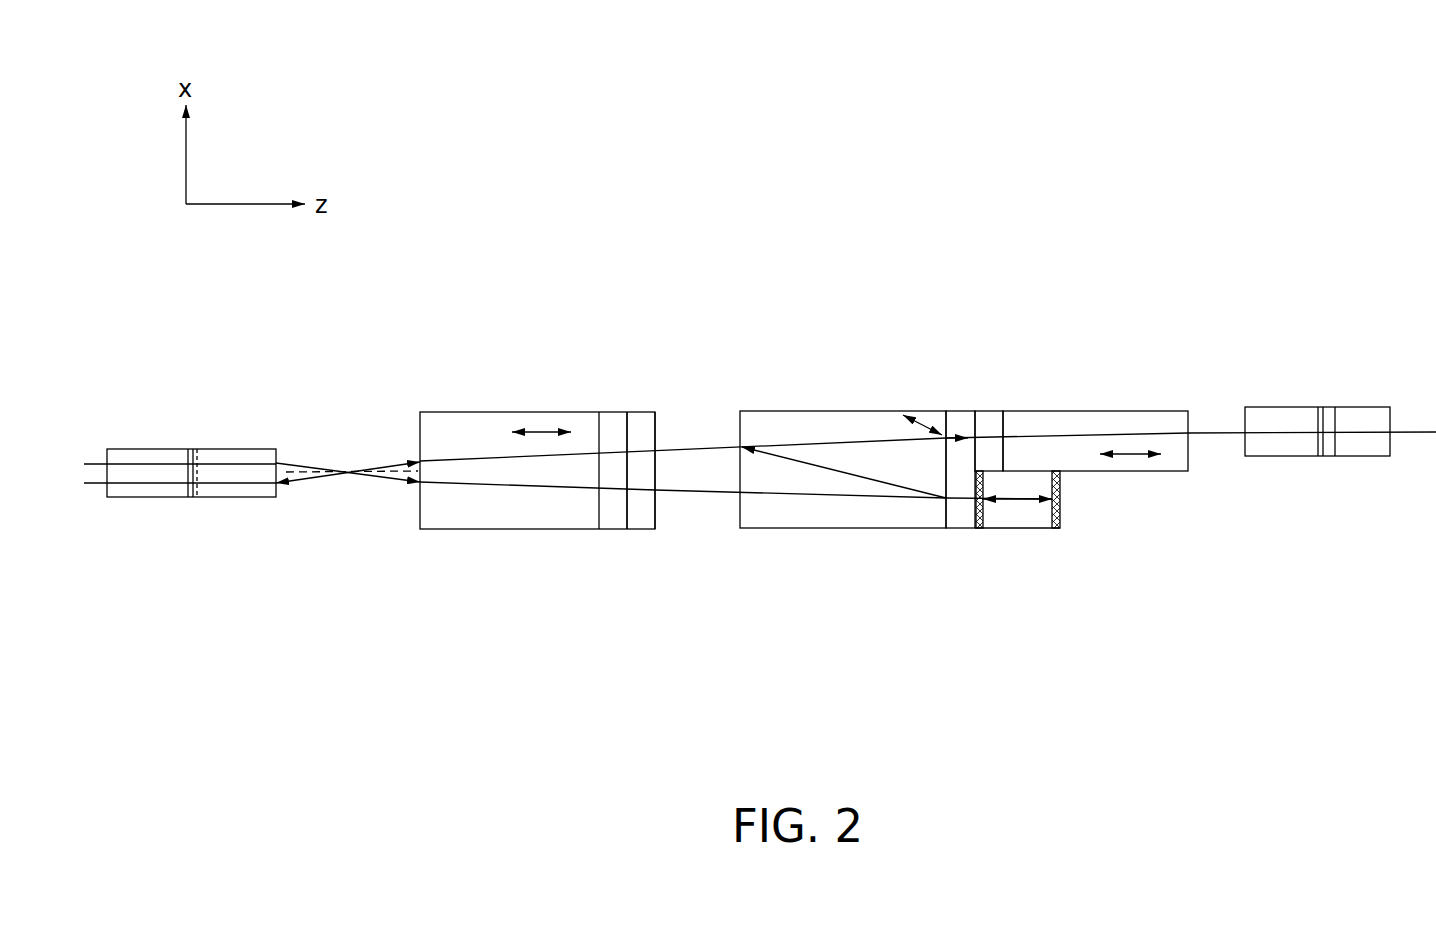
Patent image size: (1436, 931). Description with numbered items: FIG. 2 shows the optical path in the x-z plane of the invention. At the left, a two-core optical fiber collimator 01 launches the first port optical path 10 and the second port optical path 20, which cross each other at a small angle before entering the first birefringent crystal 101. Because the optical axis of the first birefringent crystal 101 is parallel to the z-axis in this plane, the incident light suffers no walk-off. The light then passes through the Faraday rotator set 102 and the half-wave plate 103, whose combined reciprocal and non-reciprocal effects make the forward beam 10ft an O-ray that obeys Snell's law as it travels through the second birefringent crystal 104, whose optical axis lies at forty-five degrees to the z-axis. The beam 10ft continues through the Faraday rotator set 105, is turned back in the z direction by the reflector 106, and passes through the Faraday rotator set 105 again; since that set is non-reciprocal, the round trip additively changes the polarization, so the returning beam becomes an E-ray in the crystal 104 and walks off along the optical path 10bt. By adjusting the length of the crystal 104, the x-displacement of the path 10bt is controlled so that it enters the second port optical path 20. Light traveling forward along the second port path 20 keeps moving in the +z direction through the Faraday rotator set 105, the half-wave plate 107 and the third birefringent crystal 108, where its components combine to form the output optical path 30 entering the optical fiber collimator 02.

The two-core optical fiber collimator 01 is at (184, 386).
The optical fiber collimator 02 is at (1317, 388).
The first port optical path 10 is at (377, 481).
The second port optical path 20 is at (378, 463).
The second port optical path (output) 30 is at (1217, 434).
The first birefringent crystal 101 is at (492, 532).
The Faraday rotator set 102 is at (612, 532).
The half-wave plate 103 is at (641, 532).
The second birefringent crystal 104 is at (815, 530).
The Faraday rotator set 105 is at (960, 530).
The reflector 106 is at (1027, 528).
The half-wave plate 107 is at (990, 410).
The third birefringent crystal 108 is at (1092, 408).
The back-traveling optical path 10bt is at (815, 460).
The forward-traveling optical path 10ft is at (907, 498).